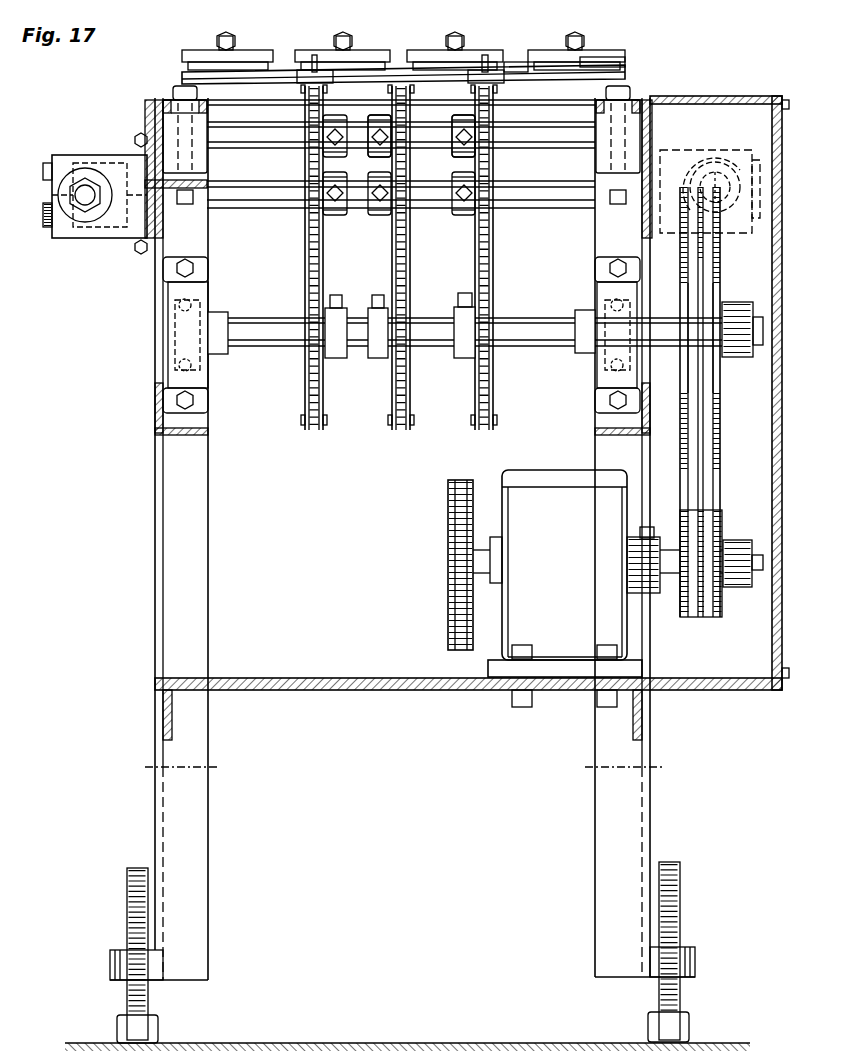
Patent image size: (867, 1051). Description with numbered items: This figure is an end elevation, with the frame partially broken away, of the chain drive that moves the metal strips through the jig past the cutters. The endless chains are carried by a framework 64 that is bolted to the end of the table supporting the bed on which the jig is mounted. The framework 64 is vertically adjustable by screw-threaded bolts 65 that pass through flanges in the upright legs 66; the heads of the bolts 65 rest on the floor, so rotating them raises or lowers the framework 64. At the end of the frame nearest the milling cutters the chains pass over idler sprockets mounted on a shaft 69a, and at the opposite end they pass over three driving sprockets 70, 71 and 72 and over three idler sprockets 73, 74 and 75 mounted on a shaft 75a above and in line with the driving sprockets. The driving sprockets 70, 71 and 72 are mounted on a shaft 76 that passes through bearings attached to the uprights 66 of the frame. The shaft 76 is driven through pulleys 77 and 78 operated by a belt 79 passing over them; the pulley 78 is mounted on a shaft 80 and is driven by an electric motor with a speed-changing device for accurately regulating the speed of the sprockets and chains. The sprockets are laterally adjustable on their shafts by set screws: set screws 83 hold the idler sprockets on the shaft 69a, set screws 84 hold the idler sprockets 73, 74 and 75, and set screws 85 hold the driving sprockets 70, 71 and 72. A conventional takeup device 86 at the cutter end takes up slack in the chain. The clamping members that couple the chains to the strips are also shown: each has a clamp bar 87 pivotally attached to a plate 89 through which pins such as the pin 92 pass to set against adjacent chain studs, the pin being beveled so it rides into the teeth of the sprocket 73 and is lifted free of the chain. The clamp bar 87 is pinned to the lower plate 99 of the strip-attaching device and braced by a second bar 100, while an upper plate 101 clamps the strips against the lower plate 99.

The framework 64 is at (157, 630).
The screw-threaded bolts 65 is at (127, 912).
The upright legs 66 is at (160, 818).
The shaft 69a is at (530, 208).
The driving sprocket 70 is at (322, 432).
The driving sprocket 71 is at (406, 432).
The driving sprocket 72 is at (490, 432).
The idler sprocket 73 is at (313, 147).
The idler sprocket 74 is at (350, 132).
The idler sprocket 75 is at (468, 138).
The shaft 75a is at (236, 142).
The shaft 76 is at (520, 320).
The pulley 77 is at (721, 404).
The pulley 78 is at (722, 527).
The belt 79 is at (718, 474).
The shaft 80 is at (757, 587).
The set screws 83 is at (464, 204).
The set screws 84 is at (464, 133).
The set screws 85 is at (338, 295).
The takeup device 86 is at (82, 240).
The clamp bar 87 is at (545, 70).
The plate 89 is at (508, 72).
The pin 92 is at (481, 68).
The lower plate 99 is at (612, 72).
The second bar 100 is at (436, 68).
The upper plate 101 is at (598, 50).